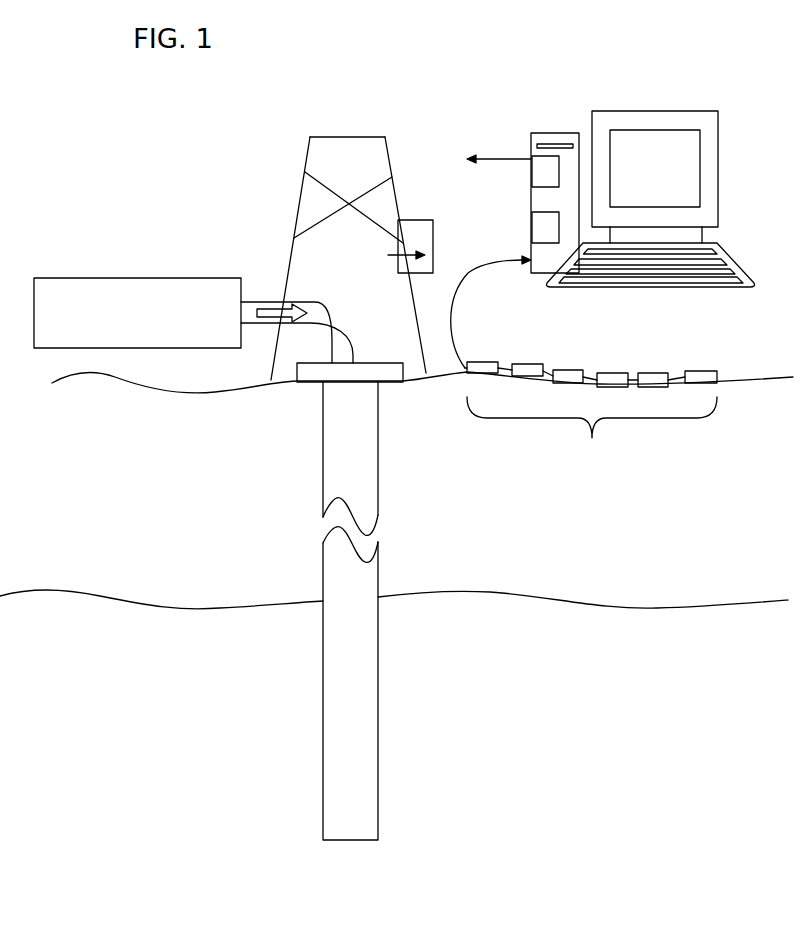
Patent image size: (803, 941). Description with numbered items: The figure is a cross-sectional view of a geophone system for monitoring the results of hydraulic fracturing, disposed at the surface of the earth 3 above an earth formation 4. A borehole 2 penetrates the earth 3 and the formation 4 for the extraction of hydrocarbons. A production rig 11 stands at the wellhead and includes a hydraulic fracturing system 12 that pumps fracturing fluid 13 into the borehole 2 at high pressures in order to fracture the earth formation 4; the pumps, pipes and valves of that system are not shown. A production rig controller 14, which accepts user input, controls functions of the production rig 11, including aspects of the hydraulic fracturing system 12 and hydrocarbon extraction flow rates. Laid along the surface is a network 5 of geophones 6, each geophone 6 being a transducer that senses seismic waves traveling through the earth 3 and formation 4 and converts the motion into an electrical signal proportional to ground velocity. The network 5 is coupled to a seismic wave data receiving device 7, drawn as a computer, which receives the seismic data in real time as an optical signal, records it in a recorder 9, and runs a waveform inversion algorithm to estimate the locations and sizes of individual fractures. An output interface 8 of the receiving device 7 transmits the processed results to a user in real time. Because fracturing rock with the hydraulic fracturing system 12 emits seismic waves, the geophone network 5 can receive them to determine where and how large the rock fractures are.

The borehole 2 is at (328, 452).
The earth 3 is at (422, 397).
The earth formation 4 is at (394, 611).
The network of geophones 5 is at (591, 417).
The geophone 6 is at (606, 372).
The seismic wave data receiving device 7 is at (543, 132).
The output interface 8 is at (555, 179).
The recorder 9 is at (555, 237).
The production rig 11 is at (260, 194).
The hydraulic fracturing system 12 is at (137, 313).
The fracturing fluid 13 is at (275, 312).
The production rig controller 14 is at (467, 217).